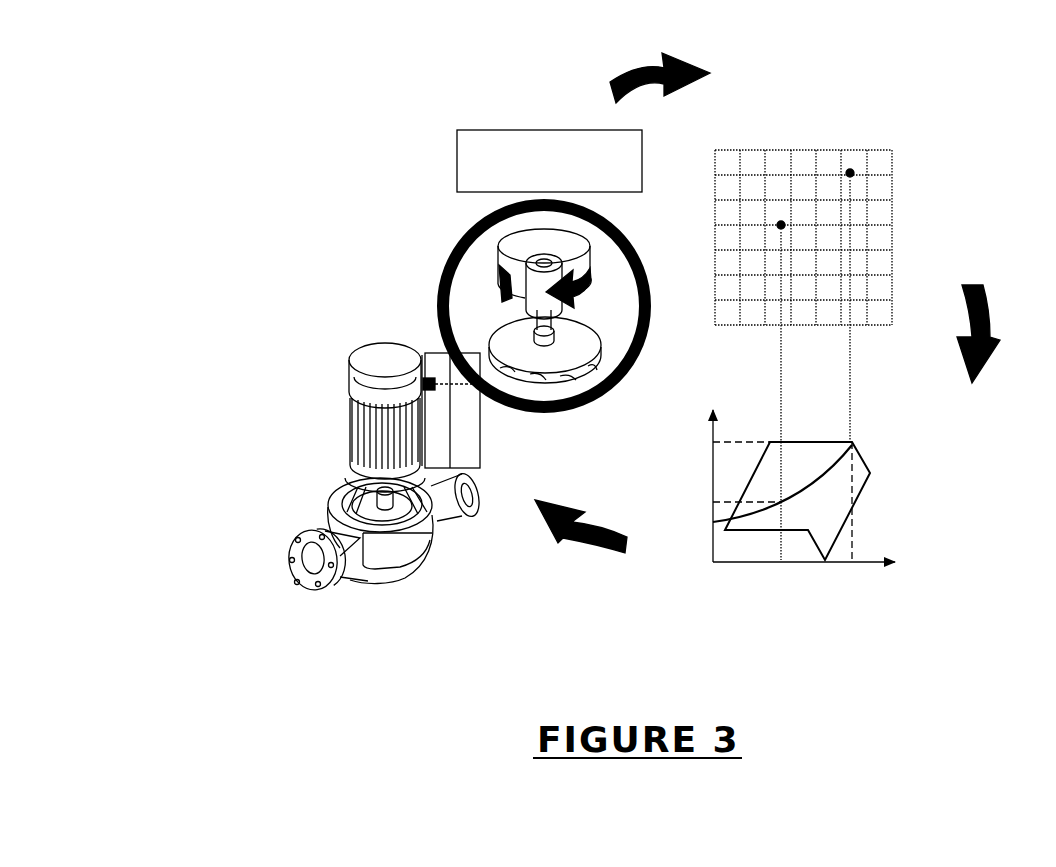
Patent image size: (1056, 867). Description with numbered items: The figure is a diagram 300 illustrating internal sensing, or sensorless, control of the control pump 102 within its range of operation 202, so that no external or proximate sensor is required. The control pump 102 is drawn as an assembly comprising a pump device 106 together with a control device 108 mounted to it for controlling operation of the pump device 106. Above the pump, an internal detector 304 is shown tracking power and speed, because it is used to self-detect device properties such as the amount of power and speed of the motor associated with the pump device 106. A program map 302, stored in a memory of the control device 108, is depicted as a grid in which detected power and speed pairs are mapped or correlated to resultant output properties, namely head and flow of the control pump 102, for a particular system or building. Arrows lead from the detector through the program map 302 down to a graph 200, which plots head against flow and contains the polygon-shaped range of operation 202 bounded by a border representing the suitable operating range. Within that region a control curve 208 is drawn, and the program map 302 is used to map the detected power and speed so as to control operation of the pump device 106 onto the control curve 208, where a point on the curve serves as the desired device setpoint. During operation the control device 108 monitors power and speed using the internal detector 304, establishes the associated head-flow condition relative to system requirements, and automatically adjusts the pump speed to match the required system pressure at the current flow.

The diagram 300 is at (298, 60).
The control pump 102 is at (328, 352).
The pump device 106 is at (393, 582).
The control device 108 is at (482, 437).
The internal detector 304 is at (457, 156).
The program map 302 is at (895, 148).
The graph 200 is at (855, 410).
The range of operation 202 is at (862, 490).
The control curve 208 is at (815, 483).